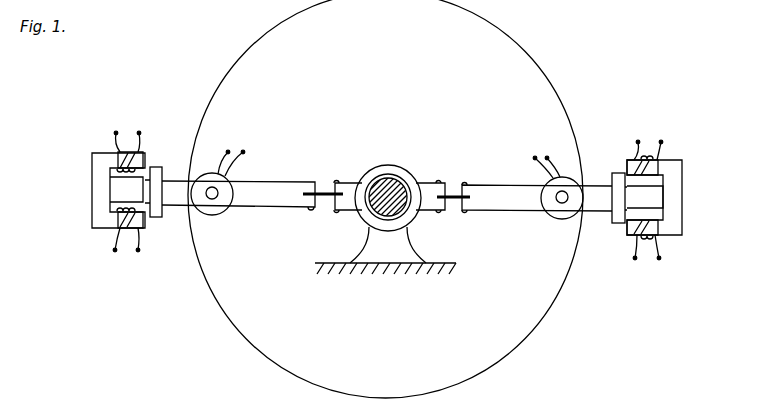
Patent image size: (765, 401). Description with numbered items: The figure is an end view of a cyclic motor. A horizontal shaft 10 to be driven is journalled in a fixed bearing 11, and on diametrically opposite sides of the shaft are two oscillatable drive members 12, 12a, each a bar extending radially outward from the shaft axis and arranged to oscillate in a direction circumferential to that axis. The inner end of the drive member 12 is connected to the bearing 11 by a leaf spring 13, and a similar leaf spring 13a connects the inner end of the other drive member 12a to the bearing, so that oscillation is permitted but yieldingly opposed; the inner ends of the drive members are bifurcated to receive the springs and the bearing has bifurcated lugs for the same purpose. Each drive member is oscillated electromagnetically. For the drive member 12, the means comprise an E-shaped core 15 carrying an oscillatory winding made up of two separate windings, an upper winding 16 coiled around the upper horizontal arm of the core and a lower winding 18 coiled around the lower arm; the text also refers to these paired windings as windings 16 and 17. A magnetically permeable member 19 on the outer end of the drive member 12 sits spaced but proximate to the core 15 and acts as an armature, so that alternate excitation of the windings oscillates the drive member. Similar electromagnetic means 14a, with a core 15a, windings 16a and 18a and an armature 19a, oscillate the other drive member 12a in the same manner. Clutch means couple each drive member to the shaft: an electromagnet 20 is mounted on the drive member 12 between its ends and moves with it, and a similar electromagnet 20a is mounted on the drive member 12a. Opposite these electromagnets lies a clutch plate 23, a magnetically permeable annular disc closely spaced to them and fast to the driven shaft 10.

The horizontal shaft 10 is at (380, 183).
The fixed bearing 11 is at (368, 167).
The oscillatable drive member 12 is at (292, 164).
The oscillatable drive member 12a is at (497, 186).
The leaf spring 13 is at (325, 190).
The leaf spring 13a is at (455, 190).
The electromagnetic means 14a is at (690, 145).
The E-shaped core 15 is at (100, 178).
The core 15a is at (670, 195).
The upper separate winding 16 is at (127, 151).
The winding 16a is at (643, 160).
The separate winding 17 is at (97, 136).
The separate winding 18 is at (127, 240).
The winding 18a is at (645, 245).
The magnetically permeable member 19 is at (156, 167).
The armature 19a is at (617, 173).
The electromagnet 20 is at (208, 163).
The electromagnet 20a is at (566, 166).
The clutch plate 23 is at (256, 342).